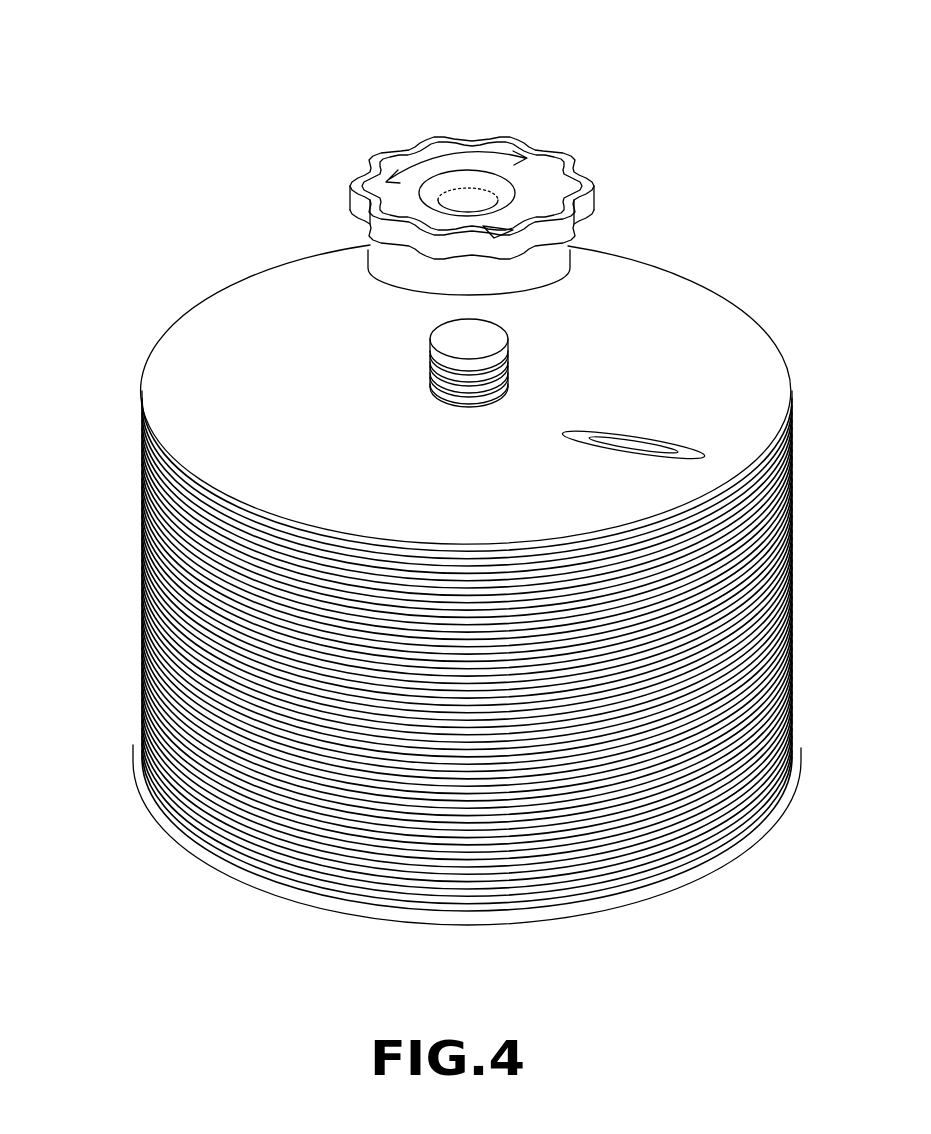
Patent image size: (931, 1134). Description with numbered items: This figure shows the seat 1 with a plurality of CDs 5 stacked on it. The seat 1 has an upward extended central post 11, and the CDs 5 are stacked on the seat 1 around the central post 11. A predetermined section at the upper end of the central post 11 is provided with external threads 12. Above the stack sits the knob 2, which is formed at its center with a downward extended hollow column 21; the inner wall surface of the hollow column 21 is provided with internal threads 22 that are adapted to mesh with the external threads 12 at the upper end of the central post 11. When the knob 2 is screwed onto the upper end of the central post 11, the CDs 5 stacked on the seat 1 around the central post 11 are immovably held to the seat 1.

The seat 1 is at (640, 894).
The knob 2 is at (518, 149).
The CDs 5 is at (171, 559).
The central post 11 is at (636, 292).
The external threads 12 is at (508, 368).
The hollow column 21 is at (457, 187).
The internal threads 22 is at (480, 202).